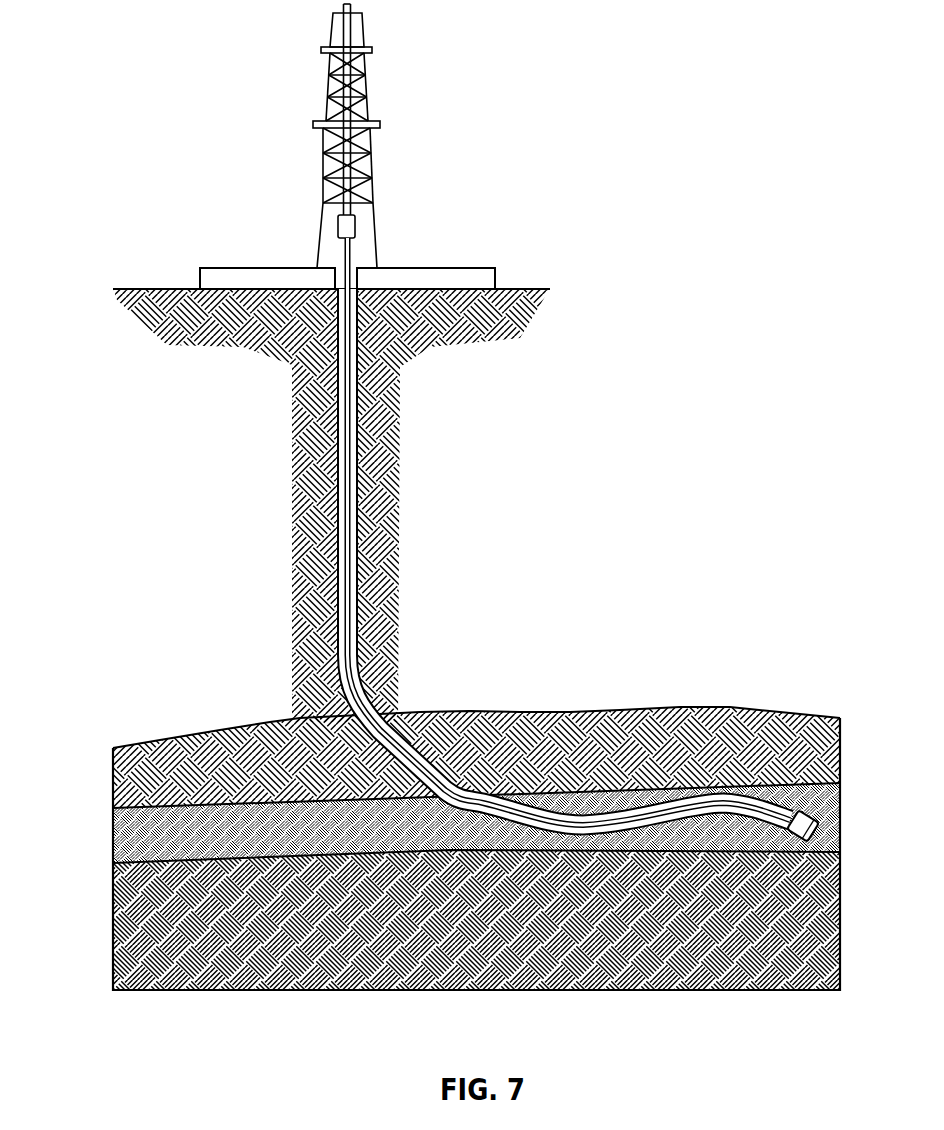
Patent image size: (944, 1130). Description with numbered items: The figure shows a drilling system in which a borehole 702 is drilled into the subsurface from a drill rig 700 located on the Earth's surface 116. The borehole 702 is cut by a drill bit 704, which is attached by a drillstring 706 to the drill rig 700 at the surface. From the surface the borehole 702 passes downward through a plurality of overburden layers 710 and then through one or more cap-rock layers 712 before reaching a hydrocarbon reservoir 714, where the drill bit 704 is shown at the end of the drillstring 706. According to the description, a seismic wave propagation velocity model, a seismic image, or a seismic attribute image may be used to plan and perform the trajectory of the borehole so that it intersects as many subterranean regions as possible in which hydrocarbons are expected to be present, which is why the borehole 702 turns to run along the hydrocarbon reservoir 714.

The Earth's surface 116 is at (535, 289).
The drill rig 700 is at (372, 155).
The borehole 702 is at (332, 433).
The drill bit 704 is at (803, 813).
The drillstring 706 is at (350, 250).
The overburden layers 710 is at (392, 427).
The cap-rock layers 712 is at (120, 772).
The hydrocarbon reservoir 714 is at (120, 848).